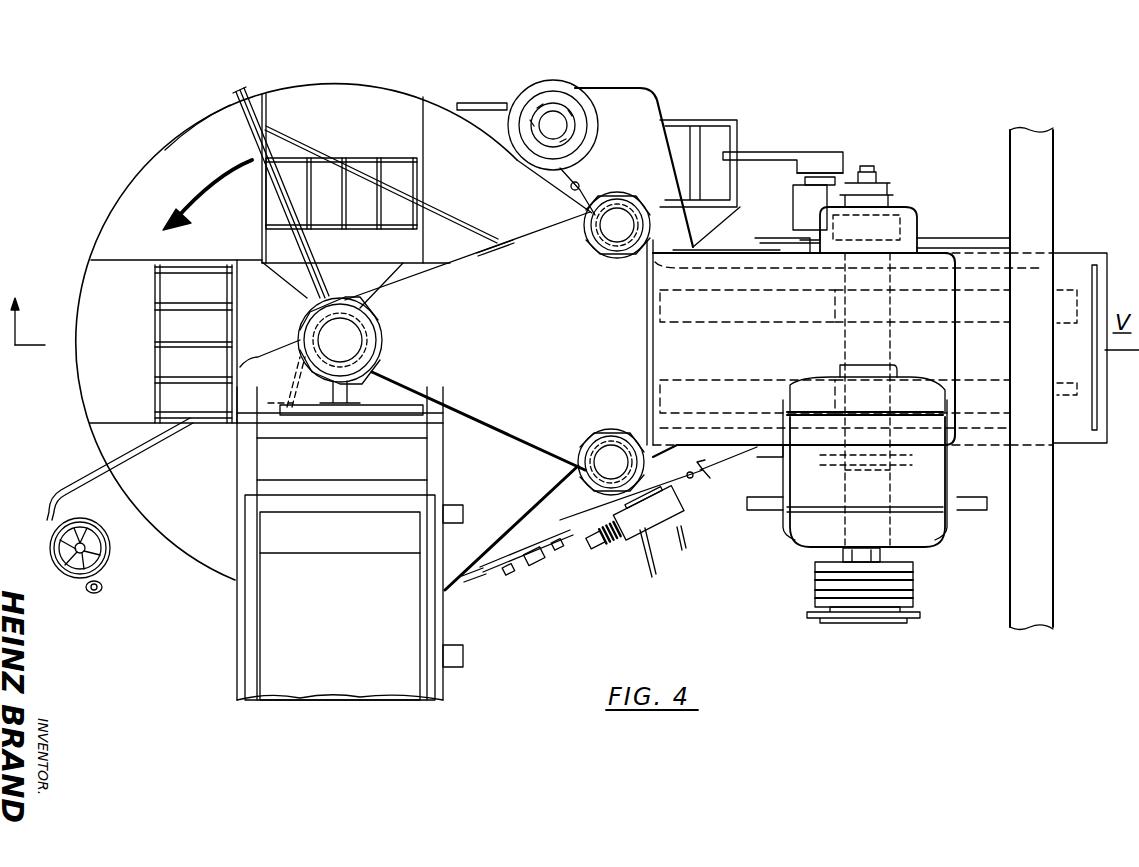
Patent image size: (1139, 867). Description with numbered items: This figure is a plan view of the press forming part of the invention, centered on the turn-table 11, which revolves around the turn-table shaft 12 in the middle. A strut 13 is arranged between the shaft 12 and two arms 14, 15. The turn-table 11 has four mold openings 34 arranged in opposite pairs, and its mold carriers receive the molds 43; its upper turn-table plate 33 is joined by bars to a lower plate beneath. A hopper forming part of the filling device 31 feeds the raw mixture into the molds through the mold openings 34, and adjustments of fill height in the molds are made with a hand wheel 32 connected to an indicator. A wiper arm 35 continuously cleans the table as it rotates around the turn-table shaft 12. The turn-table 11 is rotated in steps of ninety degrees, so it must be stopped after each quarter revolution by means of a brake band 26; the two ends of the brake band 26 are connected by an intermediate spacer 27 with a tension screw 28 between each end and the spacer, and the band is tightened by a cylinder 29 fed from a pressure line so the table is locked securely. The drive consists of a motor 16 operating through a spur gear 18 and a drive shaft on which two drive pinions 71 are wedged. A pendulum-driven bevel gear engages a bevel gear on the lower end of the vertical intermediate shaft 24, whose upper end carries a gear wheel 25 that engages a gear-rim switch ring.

The turn-table 11 is at (118, 216).
The upper turn-table plate 33 is at (208, 133).
The wiper arm 35 is at (242, 90).
The mold openings 34 is at (364, 166).
The molds 43 is at (390, 158).
The strut 13 is at (533, 308).
The turn-table shaft 12 is at (352, 340).
The filling device 31 is at (358, 683).
The hand wheel 32 is at (104, 548).
The intermediate shaft 24 is at (548, 122).
The gear wheel 25 is at (588, 113).
The arm 14 is at (626, 228).
The arm 15 is at (606, 456).
The intermediate spacer 27 is at (620, 368).
The drive pinions 71 is at (903, 297).
The motor 16 is at (920, 540).
The spur gear 18 is at (1063, 290).
The cylinder 29 is at (598, 545).
The tension screw 28 is at (532, 560).
The brake band 26 is at (475, 585).